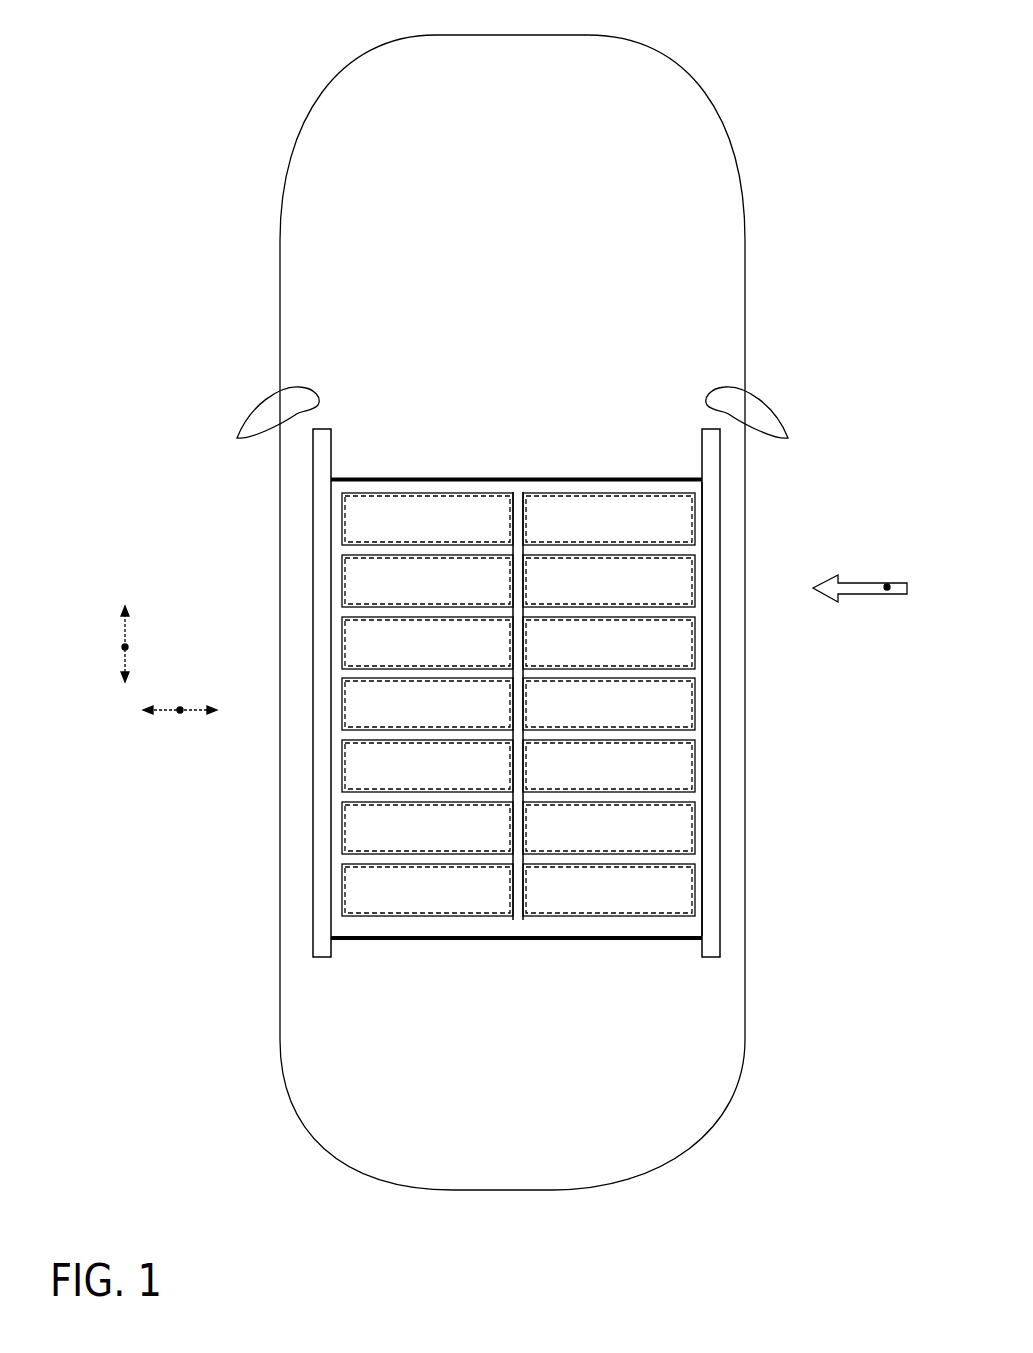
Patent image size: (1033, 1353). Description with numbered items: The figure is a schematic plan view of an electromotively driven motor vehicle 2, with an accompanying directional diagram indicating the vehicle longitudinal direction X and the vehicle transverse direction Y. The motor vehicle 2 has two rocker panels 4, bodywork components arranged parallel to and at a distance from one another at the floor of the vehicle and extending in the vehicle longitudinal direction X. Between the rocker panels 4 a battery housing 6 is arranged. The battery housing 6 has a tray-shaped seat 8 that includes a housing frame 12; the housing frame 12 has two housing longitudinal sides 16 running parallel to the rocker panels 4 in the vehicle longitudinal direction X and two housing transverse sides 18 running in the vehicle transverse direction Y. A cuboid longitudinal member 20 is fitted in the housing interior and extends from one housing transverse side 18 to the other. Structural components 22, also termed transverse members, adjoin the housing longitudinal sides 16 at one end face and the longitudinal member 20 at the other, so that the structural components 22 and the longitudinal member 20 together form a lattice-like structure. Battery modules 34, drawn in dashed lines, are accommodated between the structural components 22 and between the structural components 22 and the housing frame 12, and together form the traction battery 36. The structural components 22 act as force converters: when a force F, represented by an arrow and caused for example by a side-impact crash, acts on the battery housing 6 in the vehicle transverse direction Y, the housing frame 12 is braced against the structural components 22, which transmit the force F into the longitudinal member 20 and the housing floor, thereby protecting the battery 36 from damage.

The motor vehicle 2 is at (778, 98).
The rocker panels 4 is at (323, 452).
The battery housing 6 is at (621, 853).
The tray-shaped seat 8 is at (621, 819).
The housing frame 12 is at (621, 819).
The housing longitudinal sides 16 is at (697, 727).
The housing transverse sides 18 is at (672, 932).
The longitudinal member 20 is at (517, 610).
The structural components 22 is at (662, 546).
The battery modules 34 is at (520, 739).
The battery 36 is at (520, 739).
The vehicle longitudinal direction X is at (122, 646).
The vehicle transverse direction Y is at (180, 713).
The force F is at (889, 584).